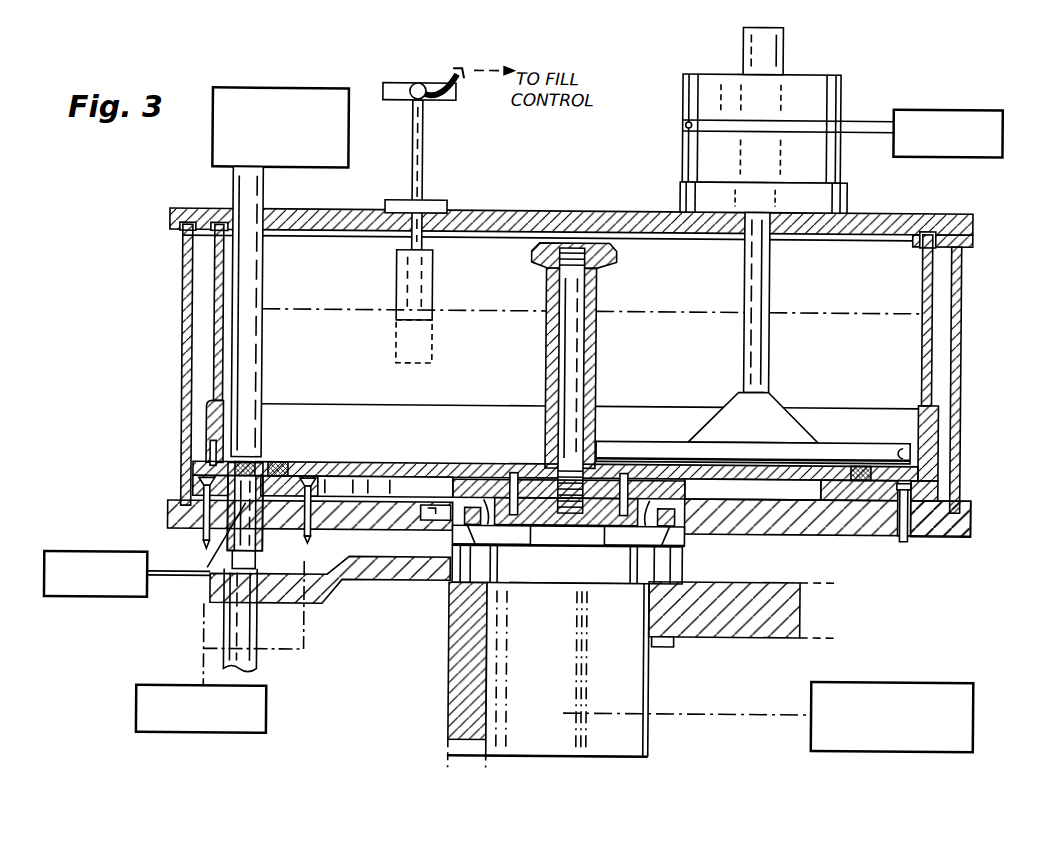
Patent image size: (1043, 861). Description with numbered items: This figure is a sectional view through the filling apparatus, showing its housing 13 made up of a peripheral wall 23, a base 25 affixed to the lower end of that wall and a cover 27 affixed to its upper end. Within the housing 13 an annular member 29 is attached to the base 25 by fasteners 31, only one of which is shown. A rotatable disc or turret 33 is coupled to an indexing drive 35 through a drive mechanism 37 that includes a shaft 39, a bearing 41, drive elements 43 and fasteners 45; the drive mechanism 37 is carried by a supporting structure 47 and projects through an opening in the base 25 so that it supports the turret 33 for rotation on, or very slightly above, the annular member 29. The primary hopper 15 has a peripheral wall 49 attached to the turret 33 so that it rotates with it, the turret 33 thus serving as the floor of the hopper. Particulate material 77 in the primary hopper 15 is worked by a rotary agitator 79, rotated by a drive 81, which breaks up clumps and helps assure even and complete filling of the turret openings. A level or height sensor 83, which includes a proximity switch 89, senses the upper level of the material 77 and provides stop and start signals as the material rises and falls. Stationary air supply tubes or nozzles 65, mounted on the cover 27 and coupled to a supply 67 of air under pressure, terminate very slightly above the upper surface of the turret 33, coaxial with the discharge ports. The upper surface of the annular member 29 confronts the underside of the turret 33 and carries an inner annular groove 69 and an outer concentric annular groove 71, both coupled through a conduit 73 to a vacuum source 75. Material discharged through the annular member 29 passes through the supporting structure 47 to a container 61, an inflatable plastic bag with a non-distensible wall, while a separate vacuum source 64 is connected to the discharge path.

The housing 13 is at (164, 222).
The primary hopper 15 is at (205, 278).
The peripheral wall 23 is at (183, 345).
The base 25 is at (172, 503).
The cover 27 is at (200, 180).
The annular member 29 is at (958, 490).
The fasteners 31 is at (913, 534).
The turret 33 is at (955, 463).
The indexing drive 35 is at (970, 655).
The drive mechanism 37 is at (658, 691).
The shaft 39 is at (567, 535).
The bearing 41 is at (625, 523).
The drive elements 43 is at (495, 527).
The fasteners 45 is at (645, 480).
The supporting structure 47 is at (708, 630).
The peripheral wall 49 is at (944, 285).
The container 61 is at (262, 630).
The vacuum source 64 is at (102, 528).
The air supply tubes or nozzles 65 is at (263, 282).
The air supply 67 is at (343, 66).
The inner annular groove 69 is at (828, 484).
The outer annular groove 71 is at (931, 541).
The conduit 73 is at (204, 632).
The vacuum source 75 is at (143, 698).
The particulate material 77 is at (903, 333).
The rotary agitator 79 is at (893, 441).
The drive 81 is at (975, 78).
The level sensor 83 is at (453, 197).
The proximity switch 89 is at (420, 55).